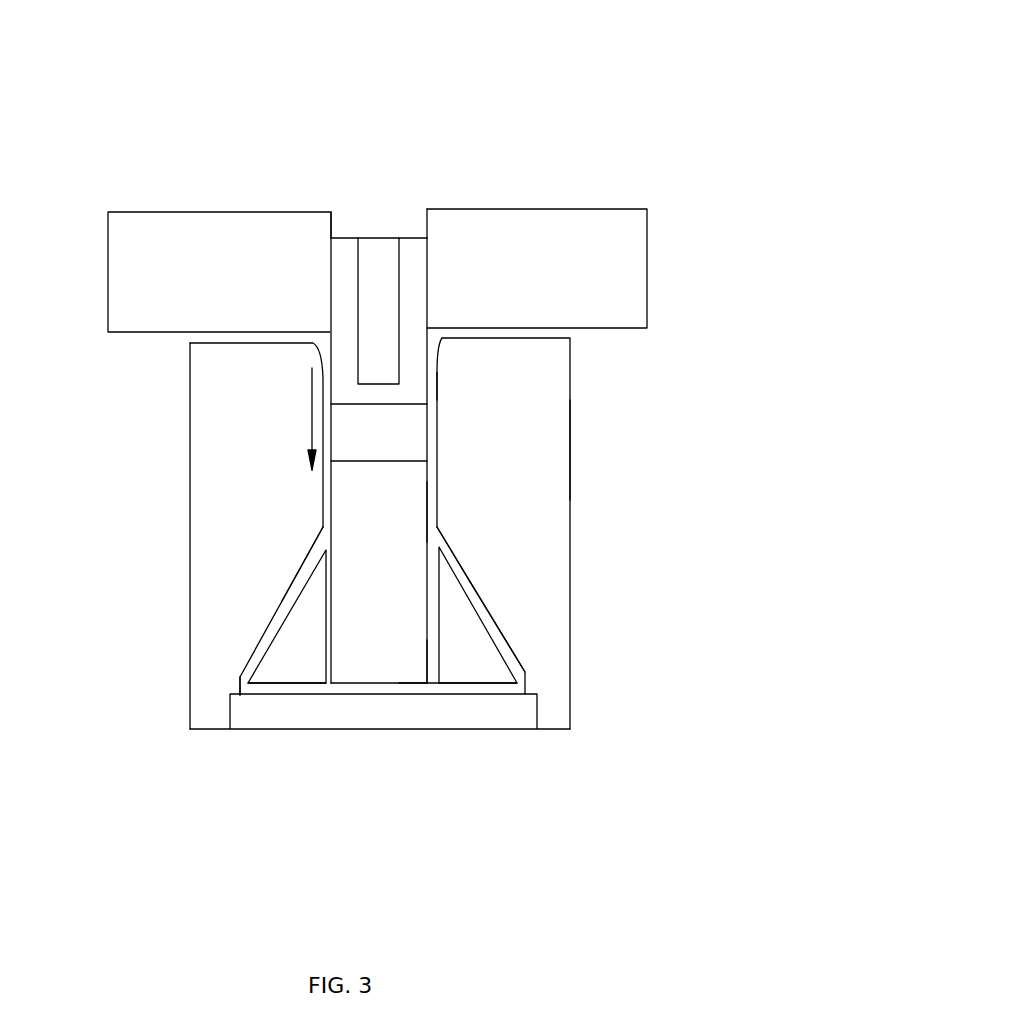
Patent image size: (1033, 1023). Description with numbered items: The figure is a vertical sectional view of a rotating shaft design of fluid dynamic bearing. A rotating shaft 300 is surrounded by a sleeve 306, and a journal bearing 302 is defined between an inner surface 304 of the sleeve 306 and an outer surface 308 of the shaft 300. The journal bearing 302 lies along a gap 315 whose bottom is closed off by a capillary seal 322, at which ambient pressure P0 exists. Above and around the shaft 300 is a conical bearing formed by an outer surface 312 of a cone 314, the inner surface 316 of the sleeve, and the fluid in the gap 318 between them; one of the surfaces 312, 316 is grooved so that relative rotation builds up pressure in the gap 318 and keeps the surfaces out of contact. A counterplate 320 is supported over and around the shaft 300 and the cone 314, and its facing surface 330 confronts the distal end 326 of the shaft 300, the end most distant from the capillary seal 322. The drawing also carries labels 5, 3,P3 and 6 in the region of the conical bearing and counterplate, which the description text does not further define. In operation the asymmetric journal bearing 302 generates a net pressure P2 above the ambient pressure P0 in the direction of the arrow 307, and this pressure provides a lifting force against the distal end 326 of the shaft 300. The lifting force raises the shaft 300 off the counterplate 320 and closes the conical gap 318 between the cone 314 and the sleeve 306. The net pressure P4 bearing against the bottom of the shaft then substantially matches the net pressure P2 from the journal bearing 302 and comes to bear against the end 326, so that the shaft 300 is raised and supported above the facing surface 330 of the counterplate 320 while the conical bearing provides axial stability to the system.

The rotating shaft 300 is at (413, 286).
The ambient pressure P0 is at (437, 350).
The capillary seal 322 is at (438, 359).
The gap 315 is at (438, 378).
The inner surface of sleeve 304 is at (438, 422).
The sleeve 306 is at (572, 463).
The journal bearing 302 is at (418, 443).
The net pressure P2 is at (430, 482).
The passage 5 is at (470, 582).
The chamber at pressure P3 3,P3 is at (483, 617).
The cone 314 is at (478, 667).
The outlet passage 6 is at (435, 667).
The counterplate 320 is at (513, 718).
The facing surface of counterplate 330 is at (443, 693).
The distal end of shaft 326 is at (412, 688).
The outer surface of cone 312 is at (283, 647).
The net pressure P4 is at (277, 637).
The inner surface of sleeve 316 is at (258, 655).
The gap 318 is at (273, 615).
The outer surface of shaft 308 is at (327, 475).
The arrow 307 is at (312, 412).